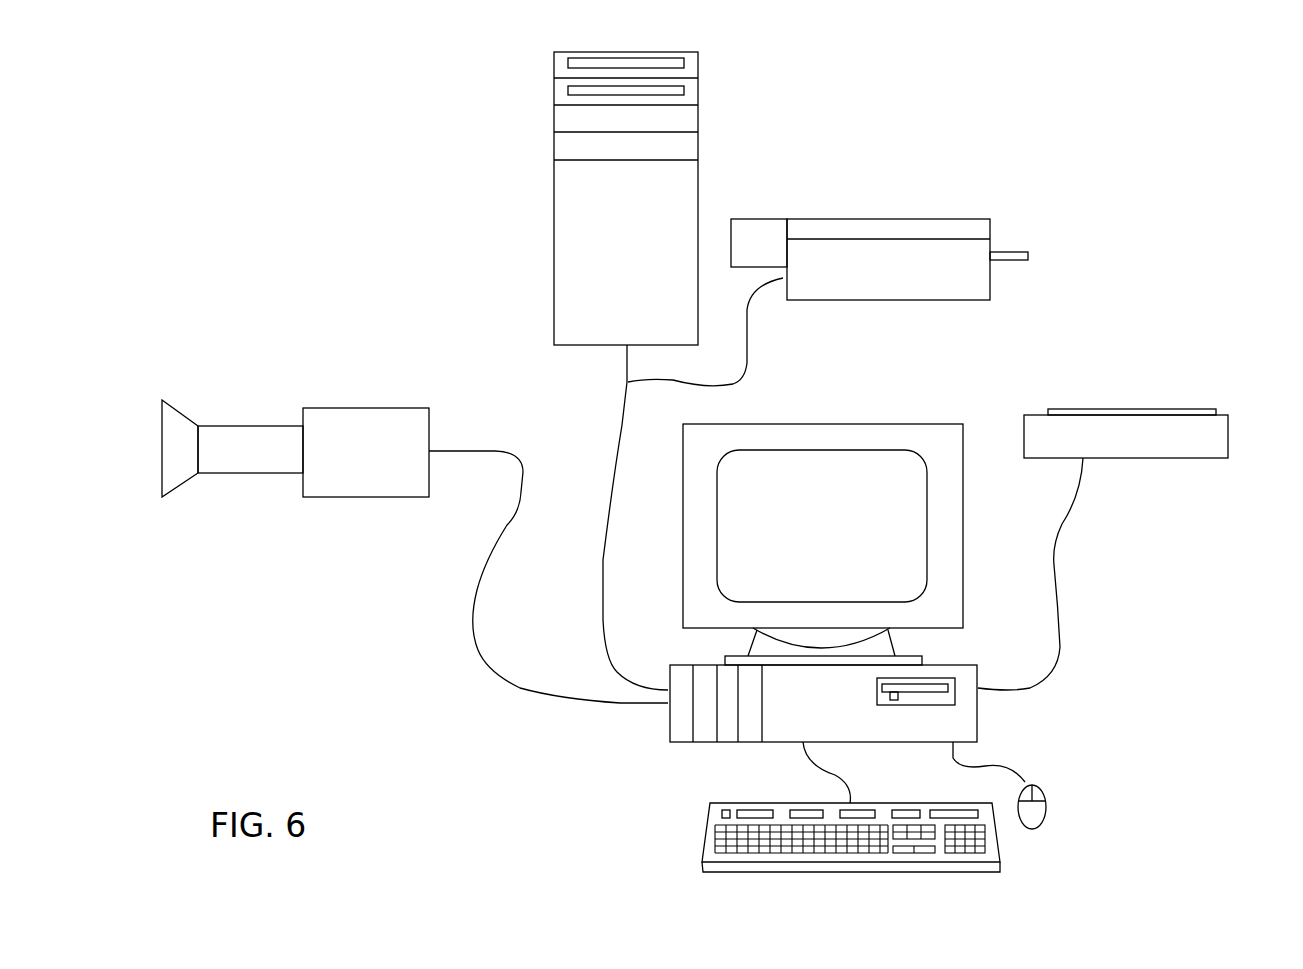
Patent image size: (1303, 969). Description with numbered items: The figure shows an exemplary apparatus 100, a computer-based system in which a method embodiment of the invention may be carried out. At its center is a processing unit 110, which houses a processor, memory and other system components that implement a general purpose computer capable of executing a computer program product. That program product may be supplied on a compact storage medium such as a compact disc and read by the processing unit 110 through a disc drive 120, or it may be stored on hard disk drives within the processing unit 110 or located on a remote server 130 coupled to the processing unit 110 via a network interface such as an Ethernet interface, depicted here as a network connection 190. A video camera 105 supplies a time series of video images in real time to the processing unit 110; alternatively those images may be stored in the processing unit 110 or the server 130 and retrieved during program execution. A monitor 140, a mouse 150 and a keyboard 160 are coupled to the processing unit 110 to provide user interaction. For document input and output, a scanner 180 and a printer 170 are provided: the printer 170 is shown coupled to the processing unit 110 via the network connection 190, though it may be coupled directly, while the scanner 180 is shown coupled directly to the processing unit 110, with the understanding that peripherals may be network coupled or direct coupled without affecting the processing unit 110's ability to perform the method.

The exemplary apparatus 100 is at (1151, 110).
The video camera 105 is at (333, 408).
The processing unit 110 is at (668, 718).
The disc drive 120 is at (702, 62).
The server 130 is at (702, 180).
The monitor 140 is at (903, 424).
The mouse 150 is at (1038, 829).
The keyboard 160 is at (700, 830).
The printer 170 is at (940, 219).
The scanner 180 is at (1165, 410).
The network cable 190 is at (622, 422).